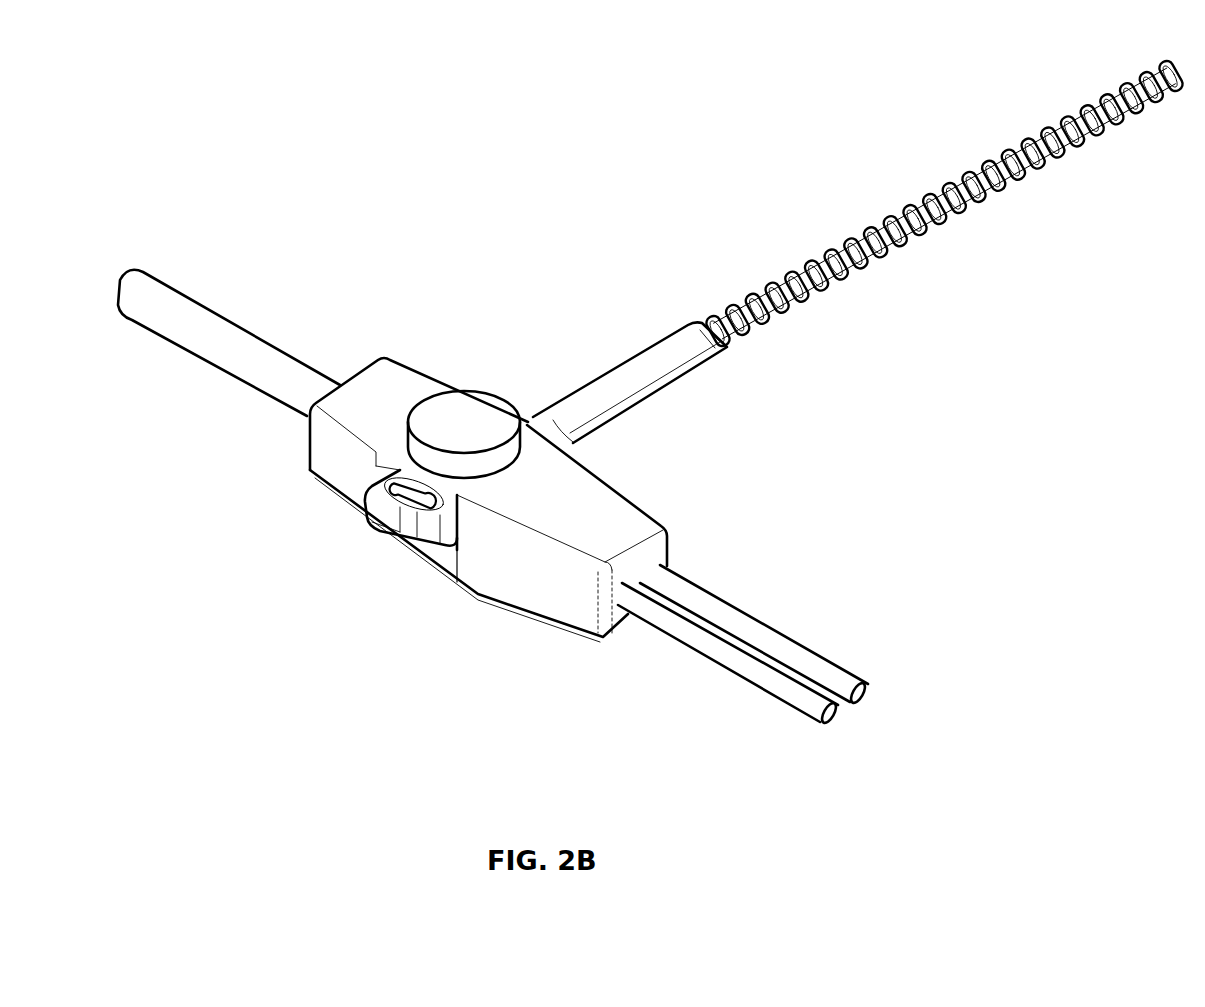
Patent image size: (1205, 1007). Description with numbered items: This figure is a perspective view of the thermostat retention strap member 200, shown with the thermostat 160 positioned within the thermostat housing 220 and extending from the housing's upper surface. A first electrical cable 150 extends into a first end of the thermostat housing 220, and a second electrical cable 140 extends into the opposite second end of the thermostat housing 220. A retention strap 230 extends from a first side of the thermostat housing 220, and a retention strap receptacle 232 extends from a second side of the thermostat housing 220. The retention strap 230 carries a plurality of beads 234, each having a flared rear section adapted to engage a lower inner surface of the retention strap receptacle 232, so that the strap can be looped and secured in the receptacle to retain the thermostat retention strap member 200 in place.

The thermostat retention strap member 200 is at (540, 55).
The second electrical cable 140 is at (757, 672).
The first electrical cable 150 is at (222, 357).
The thermostat 160 is at (478, 405).
The thermostat housing 220 is at (542, 587).
The retention strap 230 is at (697, 367).
The retention strap receptacle 232 is at (388, 520).
The beads 234 is at (932, 232).